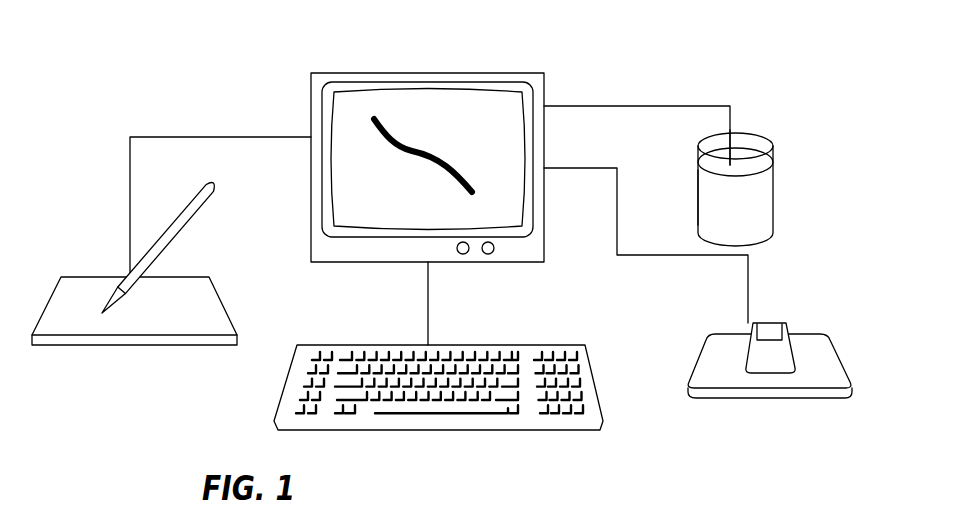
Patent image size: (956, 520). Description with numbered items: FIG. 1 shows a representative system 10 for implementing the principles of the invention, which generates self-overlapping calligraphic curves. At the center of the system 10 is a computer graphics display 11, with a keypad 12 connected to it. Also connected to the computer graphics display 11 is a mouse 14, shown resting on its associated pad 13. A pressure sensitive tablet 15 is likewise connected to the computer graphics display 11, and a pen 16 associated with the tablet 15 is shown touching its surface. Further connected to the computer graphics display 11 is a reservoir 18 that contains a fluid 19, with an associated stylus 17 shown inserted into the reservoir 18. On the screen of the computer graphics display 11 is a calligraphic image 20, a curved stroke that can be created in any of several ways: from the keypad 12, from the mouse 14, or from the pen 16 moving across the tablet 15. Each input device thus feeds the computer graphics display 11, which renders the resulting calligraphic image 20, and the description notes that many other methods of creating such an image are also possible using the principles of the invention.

The system 10 is at (226, 86).
The computer graphics display 11 is at (502, 125).
The keypad 12 is at (488, 432).
The pad 13 is at (843, 360).
The mouse 14 is at (767, 365).
The pressure sensitive tablet 15 is at (85, 276).
The pen 16 is at (207, 203).
The stylus 17 is at (737, 152).
The reservoir 18 is at (775, 187).
The fluid 19 is at (697, 180).
The calligraphic image 20 is at (425, 152).